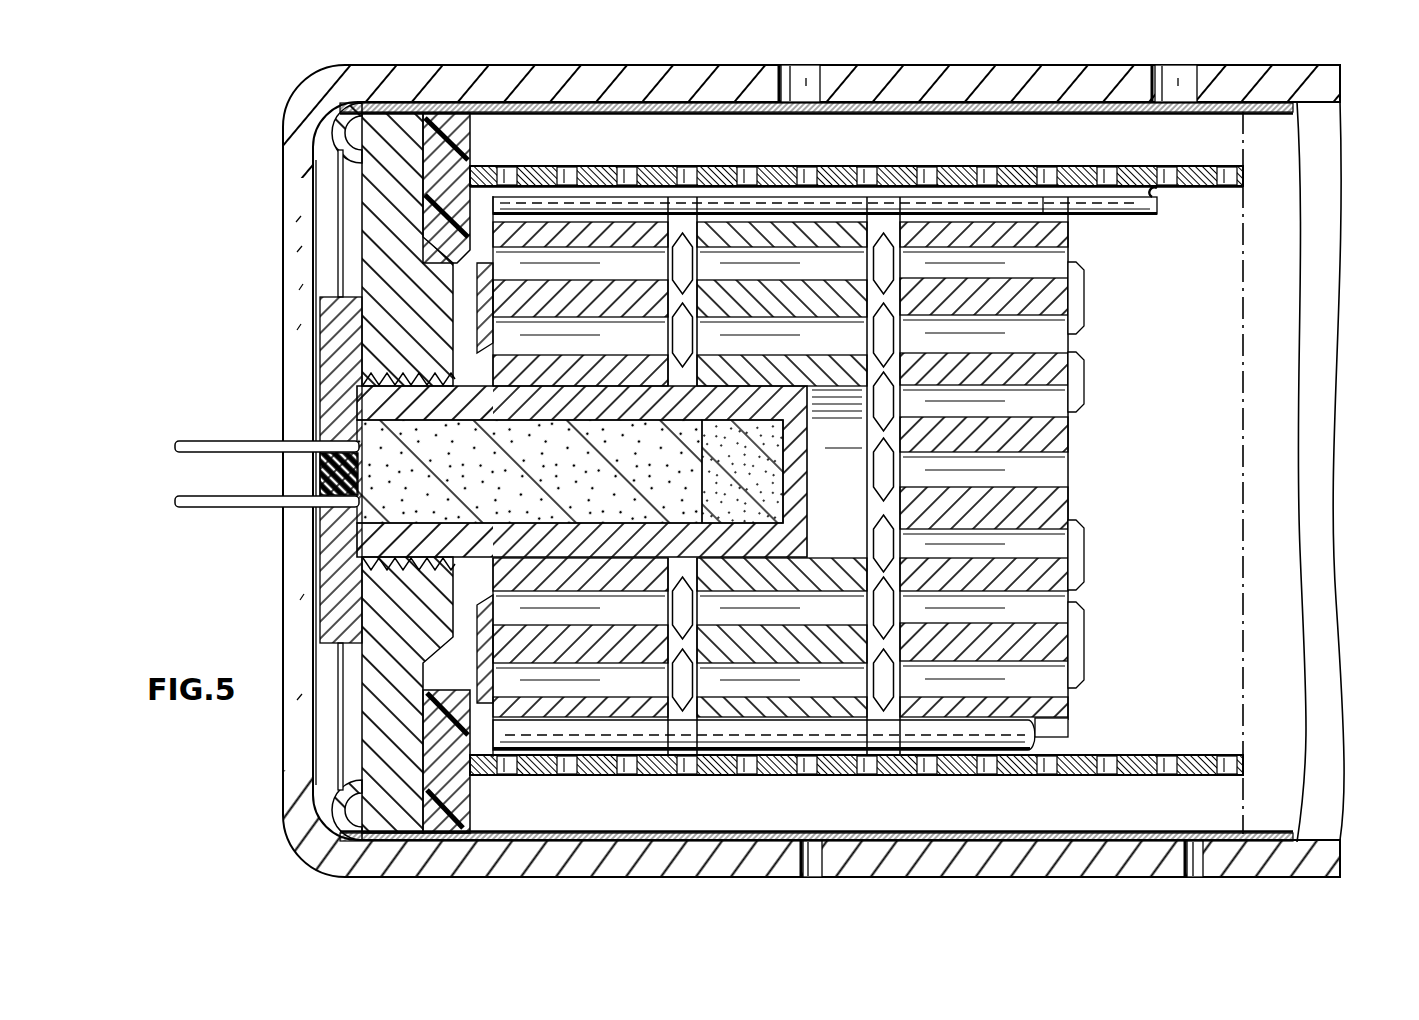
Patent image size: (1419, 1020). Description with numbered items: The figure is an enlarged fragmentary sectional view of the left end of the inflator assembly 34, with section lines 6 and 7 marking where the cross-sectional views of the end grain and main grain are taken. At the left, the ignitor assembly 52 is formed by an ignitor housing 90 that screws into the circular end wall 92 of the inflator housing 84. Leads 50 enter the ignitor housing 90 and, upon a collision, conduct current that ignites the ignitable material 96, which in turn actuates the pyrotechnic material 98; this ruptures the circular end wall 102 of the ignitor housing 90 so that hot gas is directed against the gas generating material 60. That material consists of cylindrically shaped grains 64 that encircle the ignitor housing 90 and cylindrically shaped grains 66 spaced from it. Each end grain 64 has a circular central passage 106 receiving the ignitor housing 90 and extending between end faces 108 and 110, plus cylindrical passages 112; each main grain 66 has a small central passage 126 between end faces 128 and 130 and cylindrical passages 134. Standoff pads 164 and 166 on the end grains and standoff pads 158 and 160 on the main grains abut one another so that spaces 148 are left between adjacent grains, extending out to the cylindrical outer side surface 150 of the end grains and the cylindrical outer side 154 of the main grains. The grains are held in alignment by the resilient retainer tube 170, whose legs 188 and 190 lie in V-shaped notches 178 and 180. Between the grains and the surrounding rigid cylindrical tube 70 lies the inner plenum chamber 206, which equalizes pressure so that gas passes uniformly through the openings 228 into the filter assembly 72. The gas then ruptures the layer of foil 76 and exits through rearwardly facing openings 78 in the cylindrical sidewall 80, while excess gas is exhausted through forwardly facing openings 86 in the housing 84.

The inflator assembly 34 is at (1377, 89).
The leads 50 is at (218, 502).
The ignitor assembly 52 is at (313, 580).
The gas generating material 60 is at (1172, 298).
The cylindrically shaped grains 64 is at (568, 220).
The cylindrically shaped grains 66 is at (979, 216).
The rigid cylindrical tube 70 is at (1190, 186).
The filter assembly 72 is at (1201, 116).
The layer of foil 76 is at (967, 112).
The rearwardly facing openings 78 is at (1177, 84).
The cylindrical sidewall 80 is at (1292, 858).
The inflator housing 84 is at (283, 96).
The forwardly facing openings 86 is at (812, 868).
The ignitor housing 90 is at (333, 399).
The circular end wall 92 is at (392, 684).
The ignitable material 96 is at (393, 503).
The pyrotechnic material 98 is at (750, 501).
The circular end wall 102 is at (800, 478).
The circular central passage 106 is at (860, 456).
The end face 108 is at (490, 604).
The end face 110 is at (680, 726).
The cylindrical passages 112 is at (552, 268).
The cylindrical central passage 126 is at (1058, 478).
The end face 128 is at (866, 344).
The end face 130 is at (918, 222).
The cylindrical passages 134 is at (1050, 260).
The spaces 148 is at (677, 228).
The cylindrical outer side surface 150 is at (744, 196).
The cylindrical outer side 154 is at (1066, 196).
The standoff pads 158 is at (1085, 294).
The standoff pads 160 is at (898, 270).
The standoff pads 164 is at (483, 290).
The standoff pads 166 is at (869, 272).
The retainer tube 170 is at (1085, 732).
The V-shaped notches 178 is at (520, 220).
The V-shaped notches 180 is at (1063, 216).
The leg 188 is at (1113, 186).
The leg 190 is at (977, 741).
The inner plenum chamber 206 is at (1050, 744).
The openings 228 is at (1172, 185).
The section line 6- 6 is at (675, 57).
The section line 7- 7 is at (880, 57).